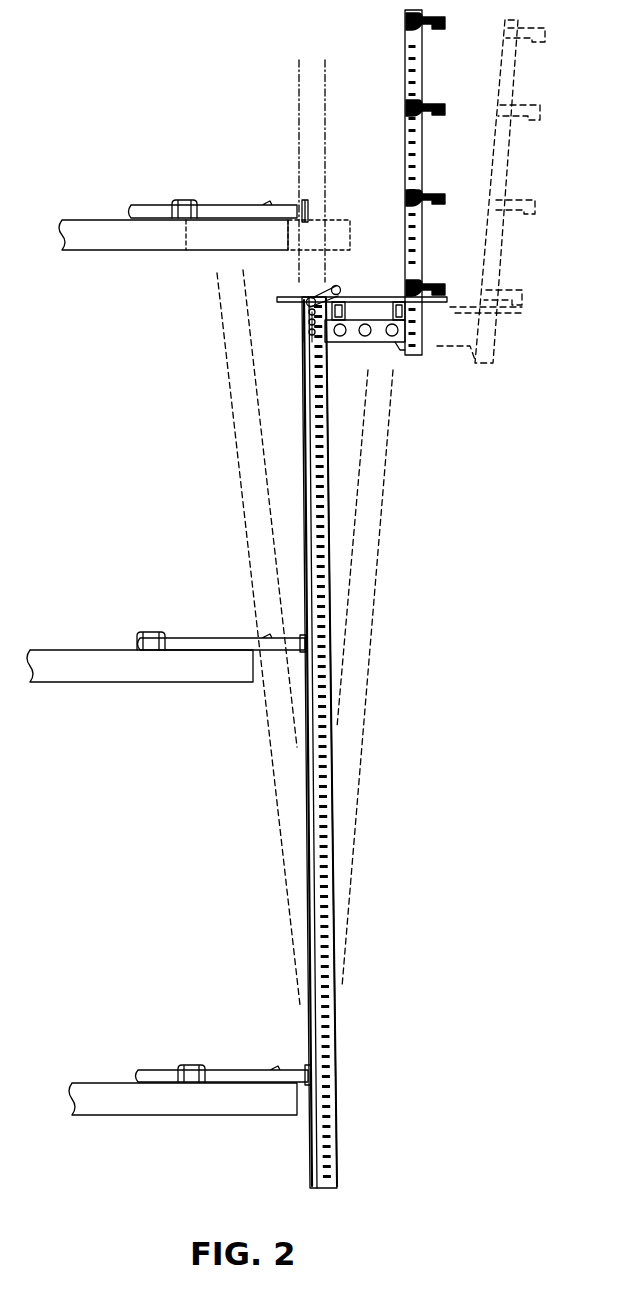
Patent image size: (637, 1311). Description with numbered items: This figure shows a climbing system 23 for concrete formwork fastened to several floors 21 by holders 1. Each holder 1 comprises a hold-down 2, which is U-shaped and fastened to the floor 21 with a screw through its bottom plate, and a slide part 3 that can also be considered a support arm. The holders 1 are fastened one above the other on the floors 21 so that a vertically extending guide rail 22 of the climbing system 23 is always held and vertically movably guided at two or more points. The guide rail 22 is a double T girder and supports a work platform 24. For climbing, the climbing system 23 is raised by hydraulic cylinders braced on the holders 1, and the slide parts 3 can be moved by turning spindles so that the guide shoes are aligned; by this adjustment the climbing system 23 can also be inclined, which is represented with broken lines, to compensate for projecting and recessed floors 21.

The holder 1 is at (195, 602).
The hold-down 2 is at (186, 212).
The slide part 3 is at (243, 212).
The floor 21 is at (120, 238).
The guide rail 22 is at (325, 455).
The climbing system 23 is at (458, 563).
The work platform 24 is at (455, 216).